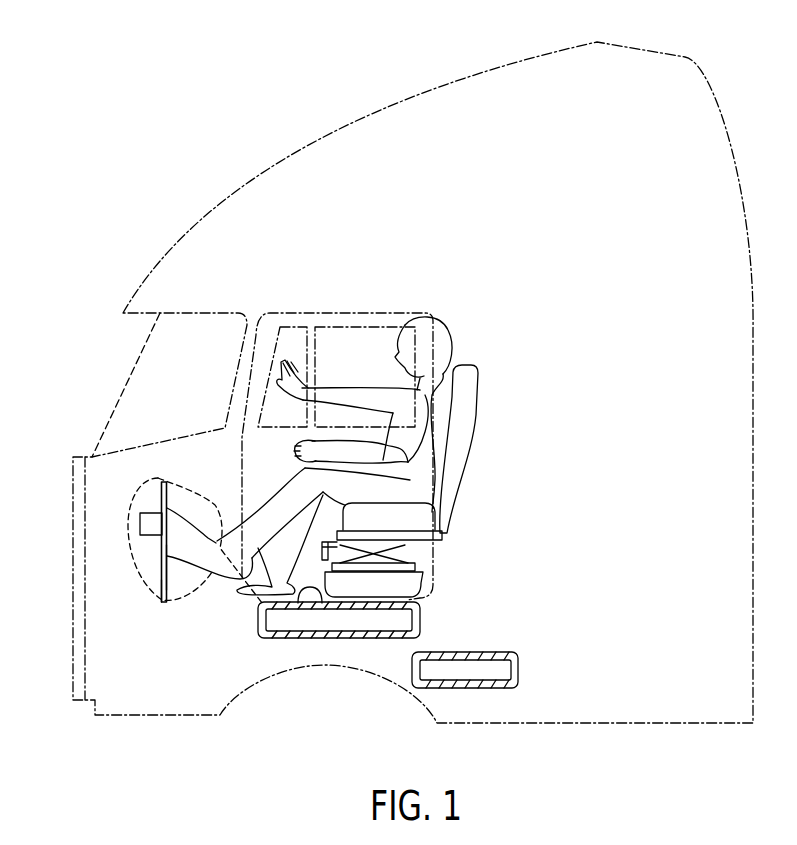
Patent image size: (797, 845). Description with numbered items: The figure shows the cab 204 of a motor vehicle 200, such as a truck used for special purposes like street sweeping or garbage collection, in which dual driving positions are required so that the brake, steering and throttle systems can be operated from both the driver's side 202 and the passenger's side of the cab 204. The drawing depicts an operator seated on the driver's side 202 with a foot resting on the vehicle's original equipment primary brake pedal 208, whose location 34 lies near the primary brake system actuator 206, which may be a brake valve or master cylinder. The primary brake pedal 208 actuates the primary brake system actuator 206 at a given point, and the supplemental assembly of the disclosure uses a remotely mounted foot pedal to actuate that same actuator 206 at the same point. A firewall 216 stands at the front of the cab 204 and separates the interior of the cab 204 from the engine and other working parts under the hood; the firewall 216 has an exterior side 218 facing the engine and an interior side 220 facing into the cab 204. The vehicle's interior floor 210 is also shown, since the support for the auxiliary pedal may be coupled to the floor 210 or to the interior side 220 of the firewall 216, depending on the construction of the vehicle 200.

The motor vehicle 200 is at (486, 74).
The driver's side 202 is at (355, 382).
The cab 204 is at (230, 368).
The primary brake system actuator 206 is at (152, 513).
The location of the primary brake pedal 34 is at (153, 547).
The primary brake pedal 208 is at (193, 522).
The interior floor 210 is at (322, 603).
The firewall 216 is at (162, 558).
The exterior side 218 is at (160, 585).
The interior side 220 is at (172, 568).